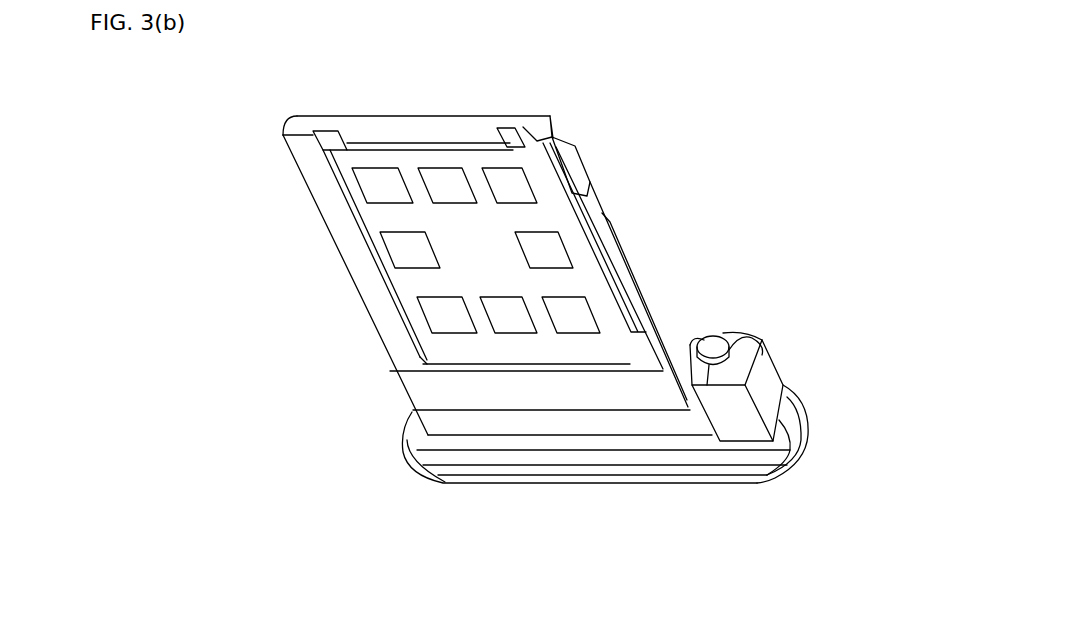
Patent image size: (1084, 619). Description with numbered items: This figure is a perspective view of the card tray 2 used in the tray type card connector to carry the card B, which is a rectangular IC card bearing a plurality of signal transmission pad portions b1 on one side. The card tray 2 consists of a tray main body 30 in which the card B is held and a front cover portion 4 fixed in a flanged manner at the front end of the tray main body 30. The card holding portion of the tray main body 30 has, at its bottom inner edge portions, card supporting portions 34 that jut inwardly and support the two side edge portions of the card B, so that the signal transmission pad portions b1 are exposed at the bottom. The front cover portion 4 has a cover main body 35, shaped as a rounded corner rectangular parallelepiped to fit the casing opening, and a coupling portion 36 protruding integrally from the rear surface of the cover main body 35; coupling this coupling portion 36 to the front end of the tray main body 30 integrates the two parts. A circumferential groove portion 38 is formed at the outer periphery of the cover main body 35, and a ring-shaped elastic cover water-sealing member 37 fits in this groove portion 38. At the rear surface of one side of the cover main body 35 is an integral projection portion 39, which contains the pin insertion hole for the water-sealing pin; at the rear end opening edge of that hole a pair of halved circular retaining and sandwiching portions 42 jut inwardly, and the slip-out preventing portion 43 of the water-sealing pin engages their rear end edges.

The card tray 2 is at (291, 111).
The tray main body 30 is at (640, 273).
The card B is at (500, 225).
The signal transmission pad portions b1 is at (447, 182).
The card supporting portions 34 is at (380, 252).
The front cover portion 4 is at (818, 397).
The cover main body 35 is at (560, 455).
The coupling portion 36 is at (487, 428).
The cover water-sealing member 37 is at (633, 463).
The groove portion 38 is at (687, 463).
The projection portion 39 is at (770, 377).
The retaining and sandwiching portions 42 is at (693, 373).
The slip-out preventing portion 43 is at (717, 340).